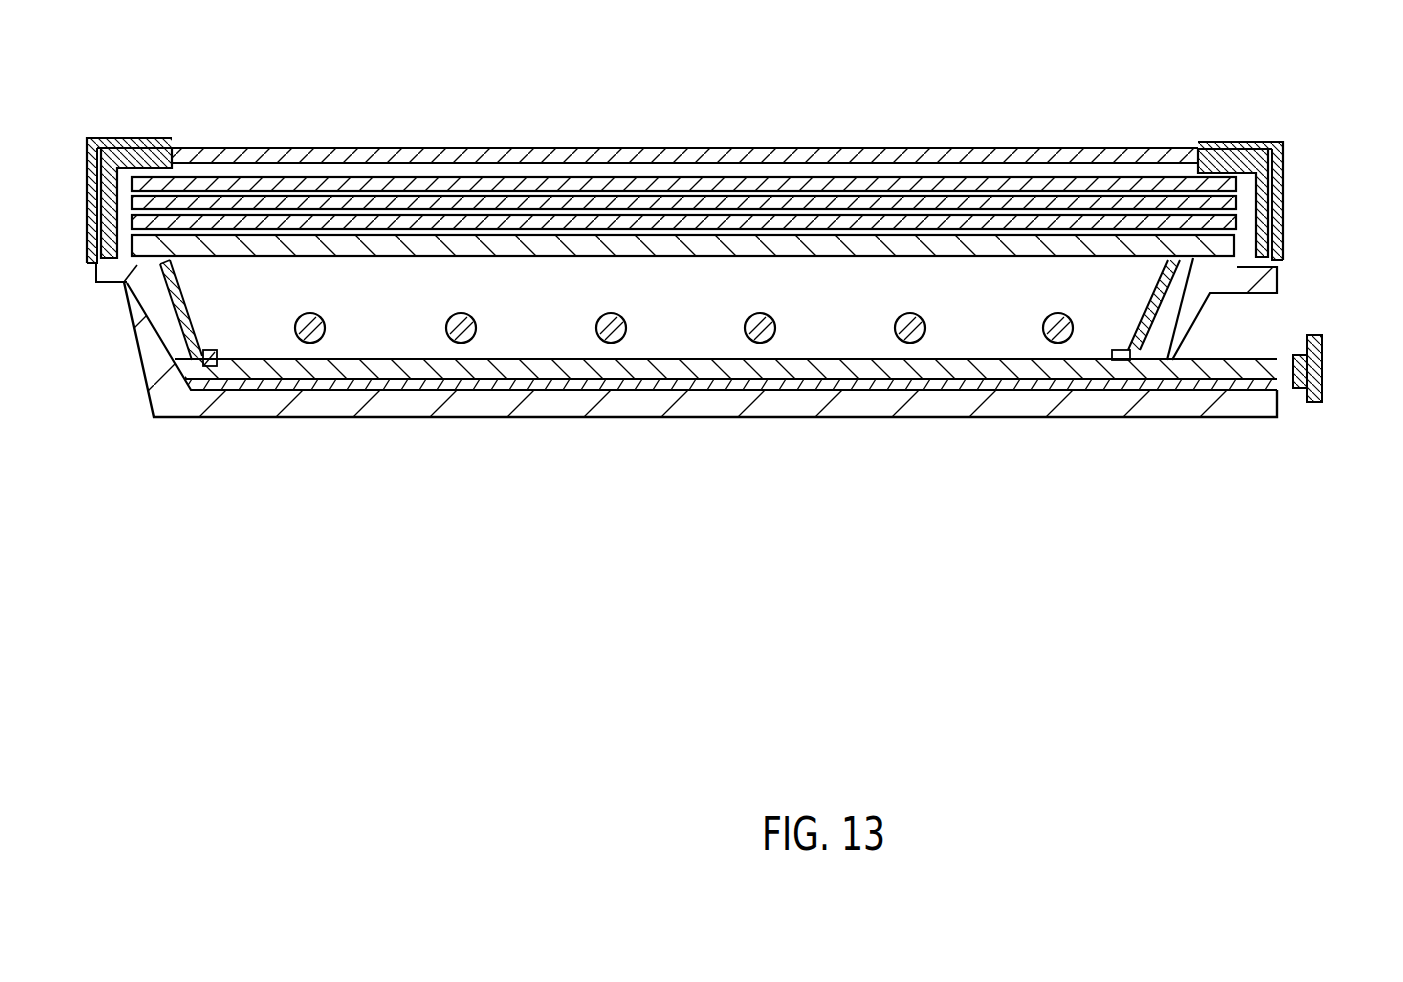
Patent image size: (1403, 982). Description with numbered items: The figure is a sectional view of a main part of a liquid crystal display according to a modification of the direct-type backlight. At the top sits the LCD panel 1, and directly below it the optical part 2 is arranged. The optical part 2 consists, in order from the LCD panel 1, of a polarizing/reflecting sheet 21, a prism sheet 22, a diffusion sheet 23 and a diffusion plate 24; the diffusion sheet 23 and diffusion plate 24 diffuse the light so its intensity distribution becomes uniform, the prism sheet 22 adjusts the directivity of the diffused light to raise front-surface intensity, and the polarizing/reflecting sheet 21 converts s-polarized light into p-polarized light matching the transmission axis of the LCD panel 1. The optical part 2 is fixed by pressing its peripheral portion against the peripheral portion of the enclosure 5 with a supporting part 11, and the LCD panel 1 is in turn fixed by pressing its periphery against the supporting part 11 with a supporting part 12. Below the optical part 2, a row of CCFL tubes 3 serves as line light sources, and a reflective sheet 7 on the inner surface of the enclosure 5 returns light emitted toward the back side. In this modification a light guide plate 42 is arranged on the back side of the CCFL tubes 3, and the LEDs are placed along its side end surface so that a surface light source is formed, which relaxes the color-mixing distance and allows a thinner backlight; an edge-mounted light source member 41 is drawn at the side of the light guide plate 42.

The LCD panel 1 is at (762, 147).
The optical part 2 is at (761, 243).
The CCFL tube 3 is at (310, 344).
The enclosure 5 is at (1073, 408).
The reflective sheet 7 is at (1150, 332).
The supporting part 11 is at (152, 158).
The supporting part 12 is at (101, 137).
The polarizing/reflecting sheet 21 is at (1240, 185).
The prism sheet 22 is at (1240, 203).
The diffusion sheet 23 is at (1240, 222).
The diffusion plate 24 is at (740, 276).
The fixing member 41 is at (1296, 386).
The light guide plate 42 is at (540, 382).